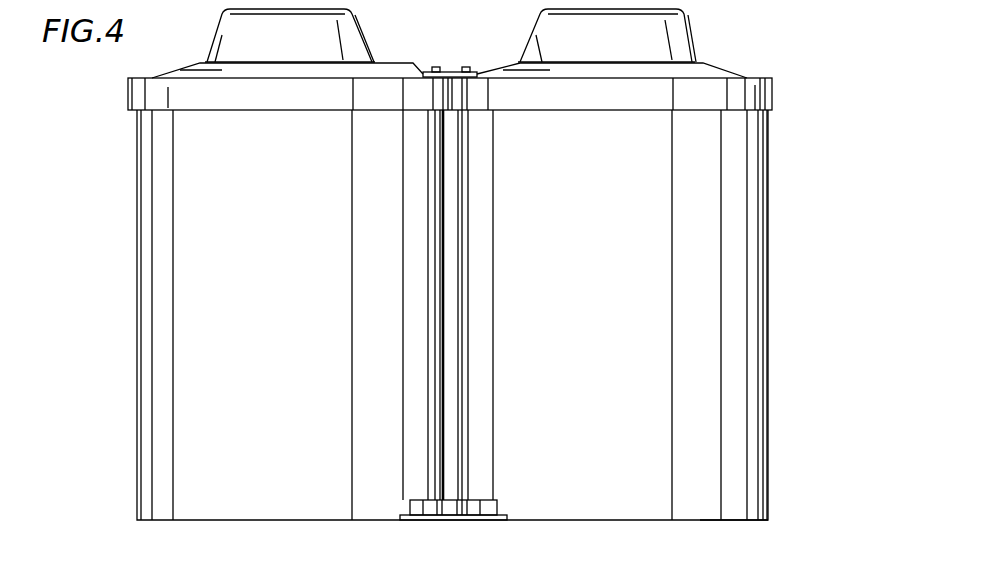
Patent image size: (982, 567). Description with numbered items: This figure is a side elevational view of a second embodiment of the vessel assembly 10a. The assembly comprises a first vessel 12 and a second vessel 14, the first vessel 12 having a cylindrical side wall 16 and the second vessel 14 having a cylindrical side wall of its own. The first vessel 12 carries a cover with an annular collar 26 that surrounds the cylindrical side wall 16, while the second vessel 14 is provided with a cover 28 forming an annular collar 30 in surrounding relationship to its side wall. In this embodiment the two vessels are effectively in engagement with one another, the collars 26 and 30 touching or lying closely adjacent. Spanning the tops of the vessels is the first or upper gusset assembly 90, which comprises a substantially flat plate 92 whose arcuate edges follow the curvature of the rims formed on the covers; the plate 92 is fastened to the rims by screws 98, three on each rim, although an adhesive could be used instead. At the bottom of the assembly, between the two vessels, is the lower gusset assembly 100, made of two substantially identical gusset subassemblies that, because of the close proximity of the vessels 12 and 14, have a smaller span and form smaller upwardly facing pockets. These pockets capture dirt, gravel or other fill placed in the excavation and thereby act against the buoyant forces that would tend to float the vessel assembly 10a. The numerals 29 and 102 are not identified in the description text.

The vessel assembly 10a is at (801, 205).
The first vessel 12 is at (126, 339).
The second vessel 14 is at (797, 343).
The cylindrical side wall 16 is at (755, 543).
The annular collar 26 is at (128, 98).
The cover 28 is at (290, 35).
The second handle 29 is at (608, 35).
The annular collar 30 is at (768, 97).
The upper gusset assembly 90 is at (453, 60).
The plate 92 is at (471, 67).
The screws 98 is at (434, 67).
The lower gusset assembly 100 is at (450, 532).
The center seam 102 is at (470, 338).